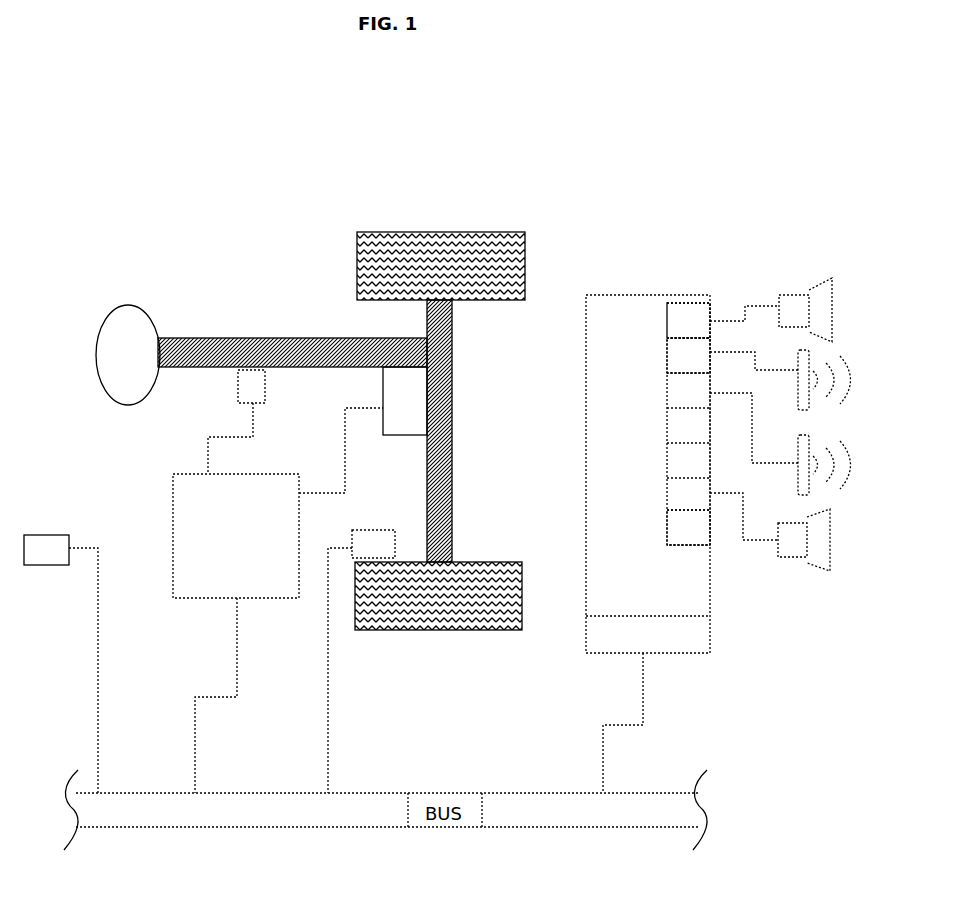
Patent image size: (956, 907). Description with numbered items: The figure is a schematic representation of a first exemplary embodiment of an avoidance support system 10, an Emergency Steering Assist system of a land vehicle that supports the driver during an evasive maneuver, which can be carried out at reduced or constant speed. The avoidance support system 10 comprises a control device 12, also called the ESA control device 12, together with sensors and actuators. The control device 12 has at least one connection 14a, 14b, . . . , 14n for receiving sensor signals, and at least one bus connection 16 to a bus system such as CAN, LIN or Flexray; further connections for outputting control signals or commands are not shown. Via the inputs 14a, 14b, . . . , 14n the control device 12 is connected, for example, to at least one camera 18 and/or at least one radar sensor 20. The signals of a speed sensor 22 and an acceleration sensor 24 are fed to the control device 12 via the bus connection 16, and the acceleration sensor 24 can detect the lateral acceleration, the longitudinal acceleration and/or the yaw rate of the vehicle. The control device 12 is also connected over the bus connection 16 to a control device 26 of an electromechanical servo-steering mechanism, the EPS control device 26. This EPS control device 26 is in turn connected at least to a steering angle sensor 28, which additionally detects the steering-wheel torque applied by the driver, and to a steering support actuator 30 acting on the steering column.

The avoidance support system 10 is at (274, 170).
The control device 12 is at (627, 337).
The connection 14a is at (688, 320).
The connection 14b is at (688, 355).
The connection 14n is at (688, 527).
The bus connection 16 is at (648, 631).
The camera 18 is at (787, 291).
The radar sensor 20 is at (796, 354).
The speed sensor 22 is at (380, 556).
The acceleration sensor 24 is at (58, 560).
The control device of an electromechanical servo-steering mechanism 26 is at (219, 513).
The steering angle sensor 28 is at (234, 389).
The steering support actuator 30 is at (378, 388).